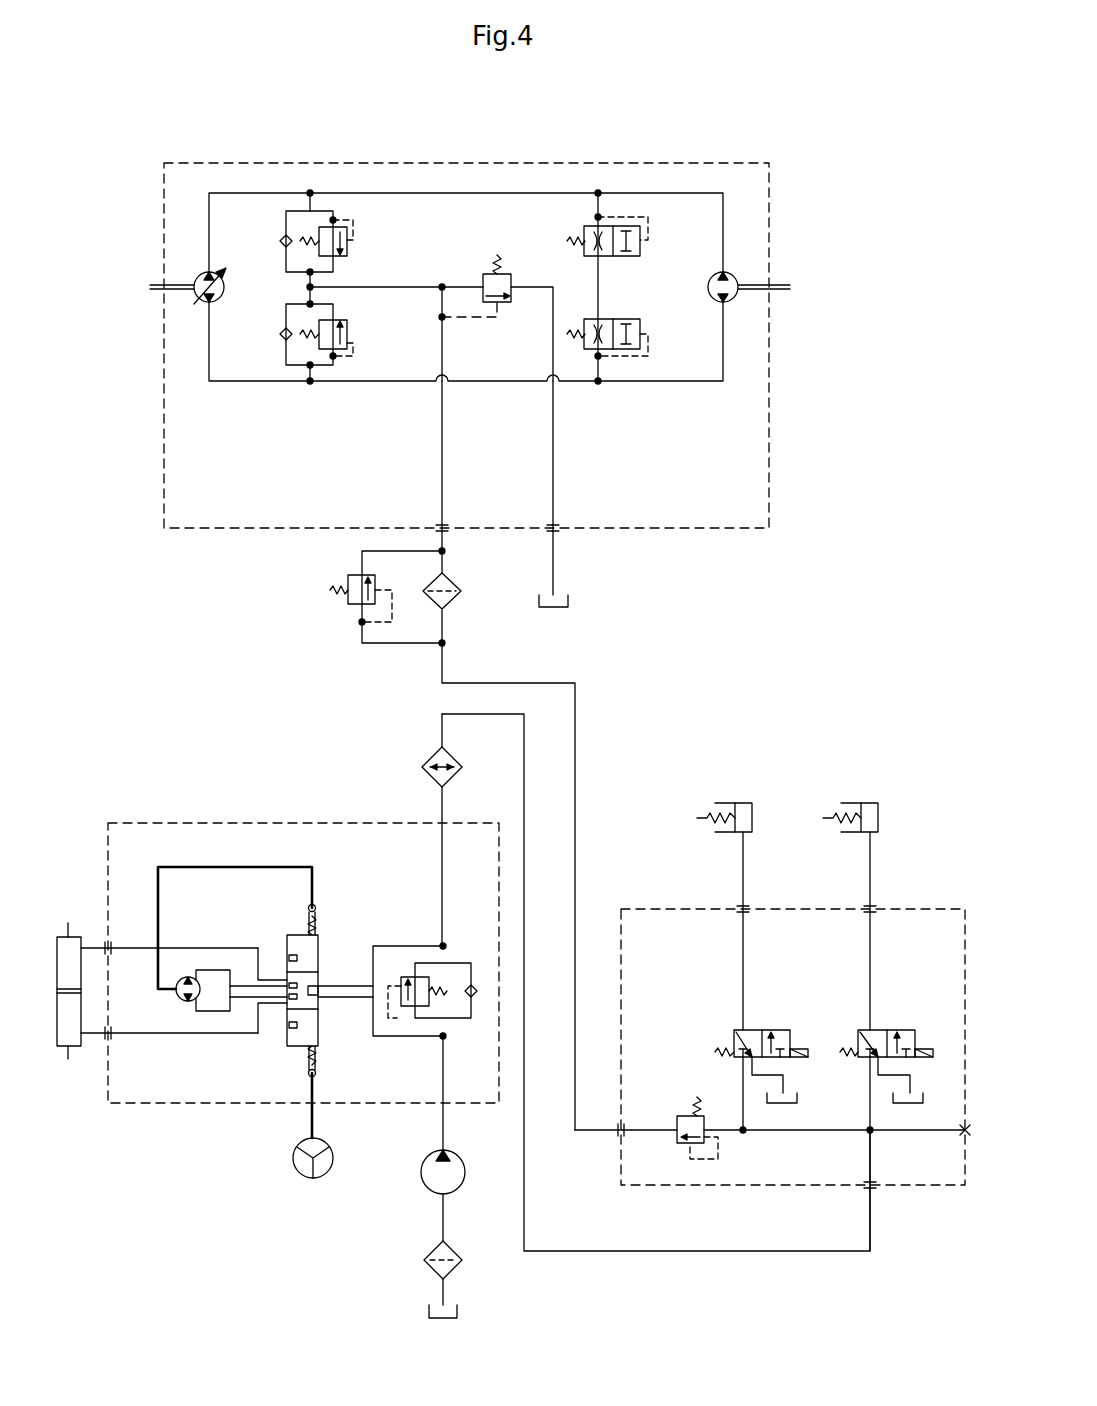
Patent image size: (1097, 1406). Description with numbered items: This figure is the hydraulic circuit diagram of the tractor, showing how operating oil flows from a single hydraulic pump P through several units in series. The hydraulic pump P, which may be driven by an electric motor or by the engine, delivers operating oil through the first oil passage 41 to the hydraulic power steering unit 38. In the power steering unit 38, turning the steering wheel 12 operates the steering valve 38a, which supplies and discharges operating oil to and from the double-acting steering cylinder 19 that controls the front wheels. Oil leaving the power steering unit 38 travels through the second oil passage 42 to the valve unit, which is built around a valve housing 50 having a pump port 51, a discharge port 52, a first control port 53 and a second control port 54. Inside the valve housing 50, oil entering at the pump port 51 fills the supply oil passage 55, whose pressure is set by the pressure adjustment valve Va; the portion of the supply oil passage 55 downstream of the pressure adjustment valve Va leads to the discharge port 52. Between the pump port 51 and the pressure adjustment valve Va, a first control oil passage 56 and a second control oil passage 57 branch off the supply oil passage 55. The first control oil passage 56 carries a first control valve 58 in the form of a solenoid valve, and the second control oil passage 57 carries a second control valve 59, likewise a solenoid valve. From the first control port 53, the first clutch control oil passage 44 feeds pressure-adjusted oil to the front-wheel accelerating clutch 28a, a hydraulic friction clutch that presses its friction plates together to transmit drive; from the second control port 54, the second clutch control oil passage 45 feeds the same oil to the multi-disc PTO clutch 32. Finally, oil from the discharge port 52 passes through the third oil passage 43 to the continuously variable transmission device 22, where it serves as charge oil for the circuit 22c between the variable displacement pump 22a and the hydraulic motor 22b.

The continuously variable transmission device 22 is at (684, 163).
The variable displacement pump 22a is at (210, 272).
The hydraulic motor 22b is at (708, 292).
The circuit 22c is at (462, 193).
The power steering unit 38 is at (240, 823).
The steering valve 38a is at (322, 950).
The steering cylinder 19 is at (78, 937).
The steering wheel 12 is at (313, 1178).
The first oil passage 41 is at (443, 1117).
The hydraulic pump P is at (422, 1180).
The third oil passage 43 is at (575, 790).
The second oil passage 42 is at (667, 1255).
The PTO clutch 32 is at (742, 803).
The front-wheel accelerating clutch 28a is at (870, 803).
The second clutch control oil passage 45 is at (745, 867).
The first clutch control oil passage 44 is at (872, 867).
The valve housing 50 is at (632, 909).
The second control port 54 is at (740, 912).
The first control port 53 is at (873, 912).
The second control valve 59 is at (733, 1045).
The first control valve 58 is at (878, 1030).
The second control oil passage 57 is at (745, 968).
The first control oil passage 56 is at (868, 968).
The pressure adjustment valve Va is at (677, 1118).
The supply oil passage 55 is at (785, 1133).
The discharge port 52 is at (620, 1133).
The pump port 51 is at (872, 1190).